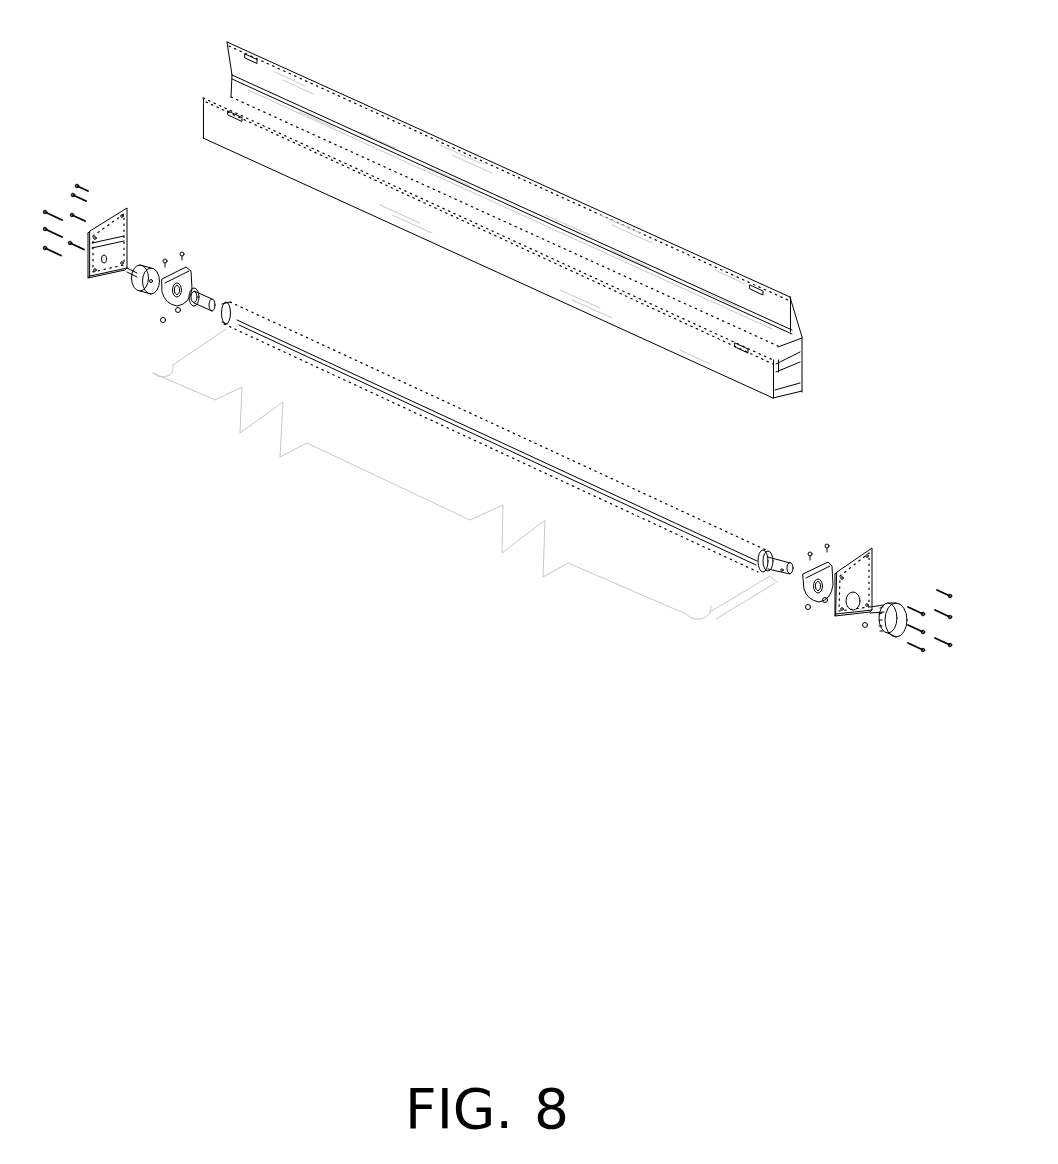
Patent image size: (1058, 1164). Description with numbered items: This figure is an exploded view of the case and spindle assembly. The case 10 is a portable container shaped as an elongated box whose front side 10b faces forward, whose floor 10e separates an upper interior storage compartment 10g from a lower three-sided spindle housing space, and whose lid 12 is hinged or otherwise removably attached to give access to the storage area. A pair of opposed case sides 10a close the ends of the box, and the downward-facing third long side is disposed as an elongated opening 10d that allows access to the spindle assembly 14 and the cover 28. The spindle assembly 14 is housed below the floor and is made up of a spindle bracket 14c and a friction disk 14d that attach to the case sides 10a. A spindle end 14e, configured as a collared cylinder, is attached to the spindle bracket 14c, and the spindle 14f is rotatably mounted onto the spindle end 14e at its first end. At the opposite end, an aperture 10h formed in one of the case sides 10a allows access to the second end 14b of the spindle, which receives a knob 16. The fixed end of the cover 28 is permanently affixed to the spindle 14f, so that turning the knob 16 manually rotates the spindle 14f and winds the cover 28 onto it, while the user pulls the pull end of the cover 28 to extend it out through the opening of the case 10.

The case 10 is at (845, 373).
The case sides 10a is at (108, 226).
The front side 10b is at (723, 358).
The elongated opening 10d is at (792, 403).
The floor 10e is at (778, 360).
The upper interior storage compartment 10g is at (220, 86).
The aperture 10h is at (853, 608).
The lid 12 is at (775, 307).
The spindle assembly 14 is at (743, 715).
The second end 14b is at (790, 577).
The spindle bracket 14c is at (187, 277).
The friction disk 14d is at (153, 277).
The spindle end 14e is at (207, 306).
The spindle 14f is at (768, 555).
The knob 16 is at (892, 633).
The cover 28 is at (652, 582).